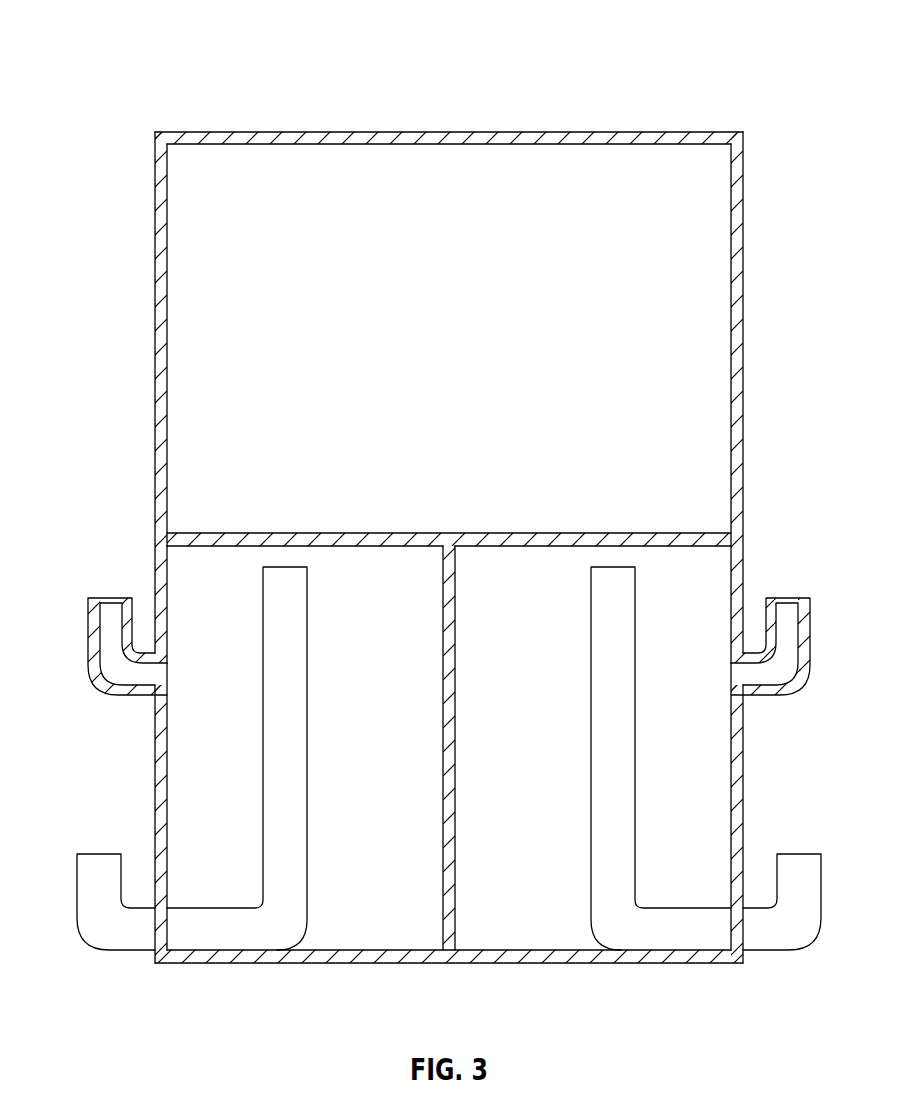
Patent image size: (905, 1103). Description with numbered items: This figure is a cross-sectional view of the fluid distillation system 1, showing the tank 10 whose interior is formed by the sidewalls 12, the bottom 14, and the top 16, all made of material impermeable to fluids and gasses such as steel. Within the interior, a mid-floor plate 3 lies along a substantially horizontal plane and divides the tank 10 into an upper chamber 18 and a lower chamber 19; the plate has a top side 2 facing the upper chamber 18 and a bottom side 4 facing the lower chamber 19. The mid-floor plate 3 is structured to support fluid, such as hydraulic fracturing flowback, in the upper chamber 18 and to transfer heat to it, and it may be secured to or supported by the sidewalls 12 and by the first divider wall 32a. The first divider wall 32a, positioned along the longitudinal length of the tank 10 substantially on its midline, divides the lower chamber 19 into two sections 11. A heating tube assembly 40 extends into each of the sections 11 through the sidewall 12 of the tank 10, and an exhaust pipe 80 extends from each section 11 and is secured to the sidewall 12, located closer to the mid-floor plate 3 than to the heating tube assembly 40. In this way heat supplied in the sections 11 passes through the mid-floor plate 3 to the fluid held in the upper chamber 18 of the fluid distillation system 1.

The fluid distillation system 1 is at (447, 525).
The tank 10 is at (447, 550).
The sidewall 12 is at (445, 547).
The top 16 is at (240, 132).
The upper chamber 18 is at (705, 280).
The lower chamber 19 is at (180, 580).
The top side 2 is at (449, 541).
The mid-floor plate 3 is at (290, 540).
The bottom side 4 is at (525, 548).
The first divider wall 32a is at (457, 720).
The sections 11 is at (352, 935).
The bottom 14 is at (475, 952).
The exhaust pipe 80 is at (90, 627).
The heating tube assembly 40 is at (105, 962).